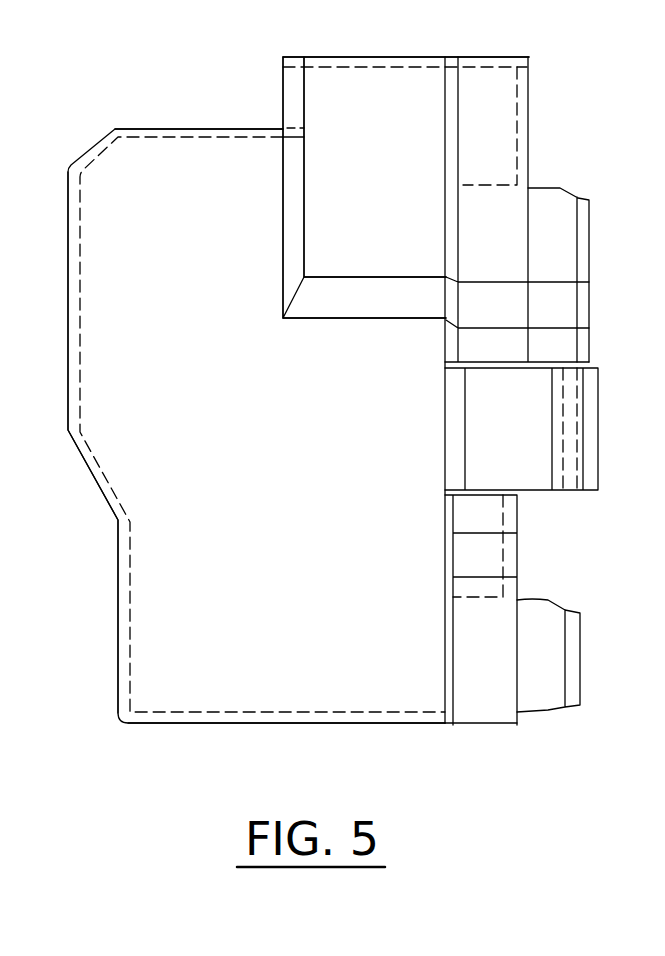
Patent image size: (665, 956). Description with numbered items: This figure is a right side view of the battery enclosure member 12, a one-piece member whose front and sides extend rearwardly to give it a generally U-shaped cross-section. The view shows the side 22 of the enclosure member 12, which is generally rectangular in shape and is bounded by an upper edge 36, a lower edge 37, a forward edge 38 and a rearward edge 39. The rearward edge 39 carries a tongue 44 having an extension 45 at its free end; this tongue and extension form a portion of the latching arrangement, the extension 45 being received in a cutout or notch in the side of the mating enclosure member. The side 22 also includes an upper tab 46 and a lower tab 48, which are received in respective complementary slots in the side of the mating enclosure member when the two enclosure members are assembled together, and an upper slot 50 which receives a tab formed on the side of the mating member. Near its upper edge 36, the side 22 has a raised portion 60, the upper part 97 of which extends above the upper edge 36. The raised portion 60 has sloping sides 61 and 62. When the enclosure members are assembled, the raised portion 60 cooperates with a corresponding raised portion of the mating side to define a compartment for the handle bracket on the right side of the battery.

The enclosure member 12 is at (283, 768).
The side 22 is at (260, 508).
The upper edge 36 is at (143, 129).
The lower edge 37 is at (152, 722).
The forward edge 38 is at (66, 355).
The rearward edge 39 is at (498, 210).
The tongue 44 is at (523, 473).
The extension 45 is at (567, 492).
The upper tab 46 is at (550, 222).
The lower tab 48 is at (535, 625).
The upper slot 50 is at (519, 103).
The raised portion 60 is at (383, 132).
The sloping side 61 is at (288, 199).
The sloping side 62 is at (397, 300).
The upper part 97 is at (412, 55).